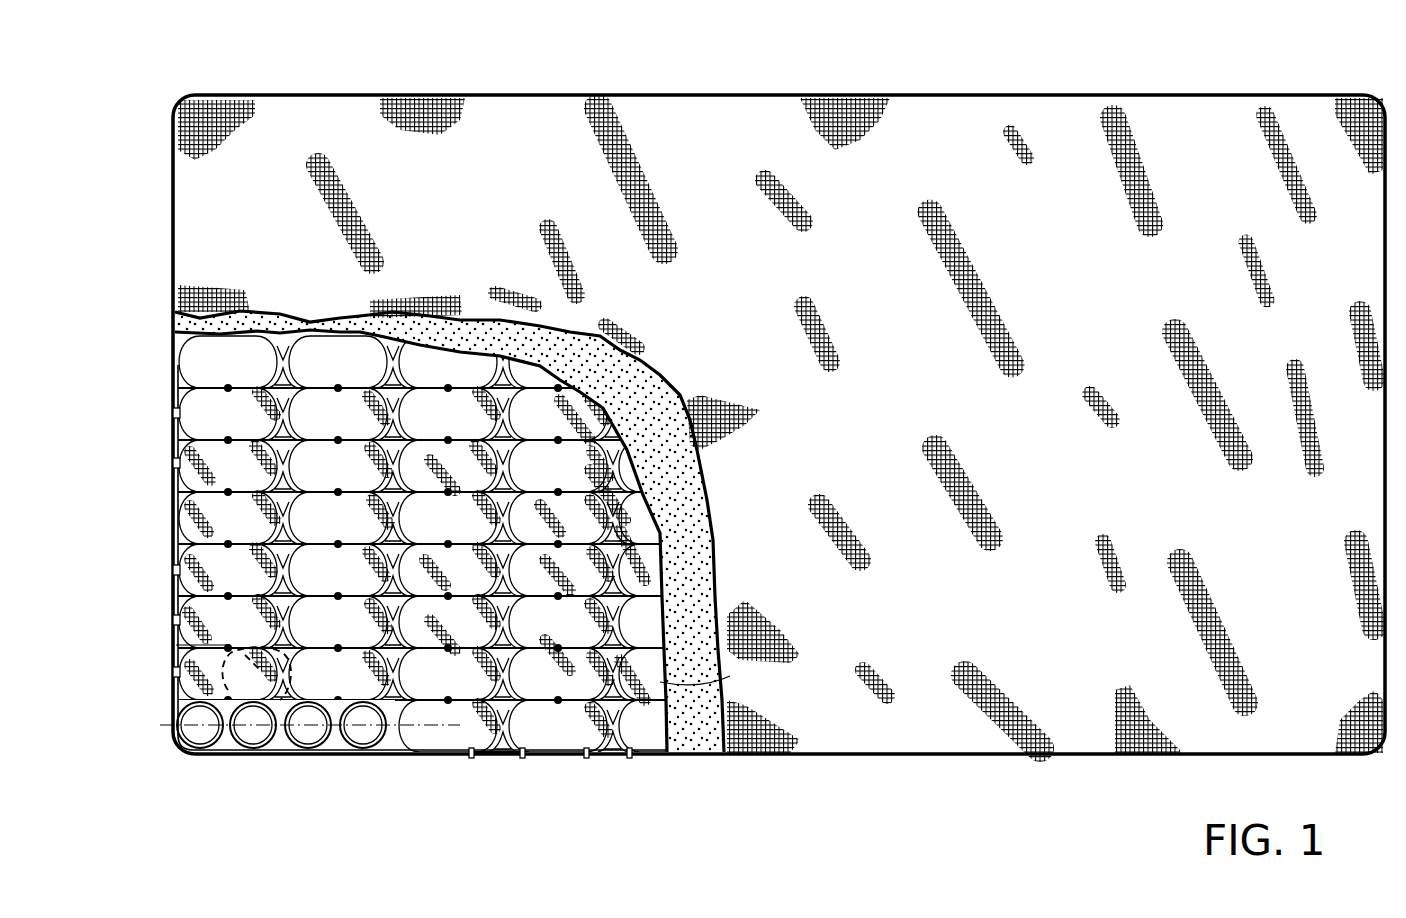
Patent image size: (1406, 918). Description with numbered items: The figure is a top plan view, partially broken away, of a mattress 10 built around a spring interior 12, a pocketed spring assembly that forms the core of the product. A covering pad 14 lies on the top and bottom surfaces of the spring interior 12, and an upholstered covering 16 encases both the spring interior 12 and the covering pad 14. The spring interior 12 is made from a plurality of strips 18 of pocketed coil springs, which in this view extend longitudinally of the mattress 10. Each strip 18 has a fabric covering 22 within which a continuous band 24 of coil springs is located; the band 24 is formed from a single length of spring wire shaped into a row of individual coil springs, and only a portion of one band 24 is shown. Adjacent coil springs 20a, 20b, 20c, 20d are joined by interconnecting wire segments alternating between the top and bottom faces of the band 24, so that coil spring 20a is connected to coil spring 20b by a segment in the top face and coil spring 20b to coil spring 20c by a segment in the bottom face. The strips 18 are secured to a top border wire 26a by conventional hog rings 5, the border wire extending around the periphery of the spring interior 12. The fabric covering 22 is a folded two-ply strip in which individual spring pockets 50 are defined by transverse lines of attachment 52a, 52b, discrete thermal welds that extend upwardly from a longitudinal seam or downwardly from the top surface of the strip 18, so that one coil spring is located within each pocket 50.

The mattress 10 is at (1352, 80).
The spring interior 12 is at (652, 565).
The covering pad 14 is at (655, 384).
The upholstered covering 16 is at (895, 416).
The strip of pocketed coil springs 18 is at (200, 453).
The coil spring 20a is at (200, 756).
The coil spring 20b is at (265, 758).
The coil spring 20c is at (312, 758).
The coil spring 20d is at (360, 758).
The fabric covering 22 is at (304, 376).
The band of coil springs 24 is at (172, 732).
The top border wire 26a is at (556, 757).
The hog ring 5 is at (178, 571).
The spring pocket 50 is at (176, 645).
The transverse line of attachment 52a is at (290, 658).
The transverse line of attachment 52b is at (290, 410).